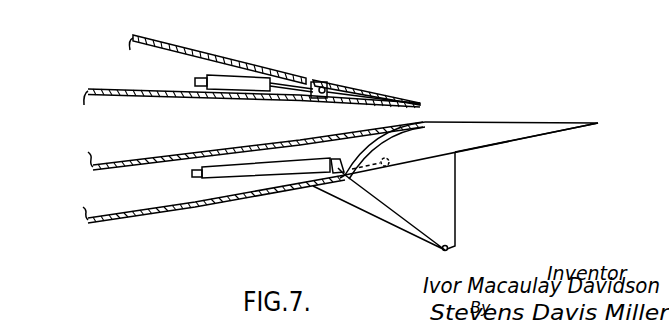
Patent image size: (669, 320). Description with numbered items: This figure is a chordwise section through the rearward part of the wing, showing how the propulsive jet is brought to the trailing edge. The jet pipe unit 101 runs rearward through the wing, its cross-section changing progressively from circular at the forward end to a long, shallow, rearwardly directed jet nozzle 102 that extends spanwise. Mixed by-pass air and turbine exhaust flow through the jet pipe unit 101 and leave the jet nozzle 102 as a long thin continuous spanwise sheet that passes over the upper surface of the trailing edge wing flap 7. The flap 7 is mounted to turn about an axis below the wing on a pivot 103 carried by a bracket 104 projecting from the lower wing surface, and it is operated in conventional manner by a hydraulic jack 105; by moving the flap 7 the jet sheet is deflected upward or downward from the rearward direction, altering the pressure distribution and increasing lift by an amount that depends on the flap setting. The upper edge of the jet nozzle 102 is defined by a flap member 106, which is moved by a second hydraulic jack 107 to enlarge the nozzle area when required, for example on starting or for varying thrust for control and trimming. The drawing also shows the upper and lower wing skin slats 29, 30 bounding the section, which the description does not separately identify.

The trailing edge wing flap 7 is at (525, 130).
The upper spoiler slat 29 is at (177, 48).
The lower wing skin slat 30 is at (155, 222).
The jet pipe unit 101 is at (133, 108).
The jet nozzle 102 is at (413, 113).
The pivot 103 is at (448, 248).
The bracket 104 is at (348, 193).
The hydraulic jack 105 is at (212, 180).
The flap member 106 is at (360, 88).
The hydraulic jack 107 is at (215, 75).